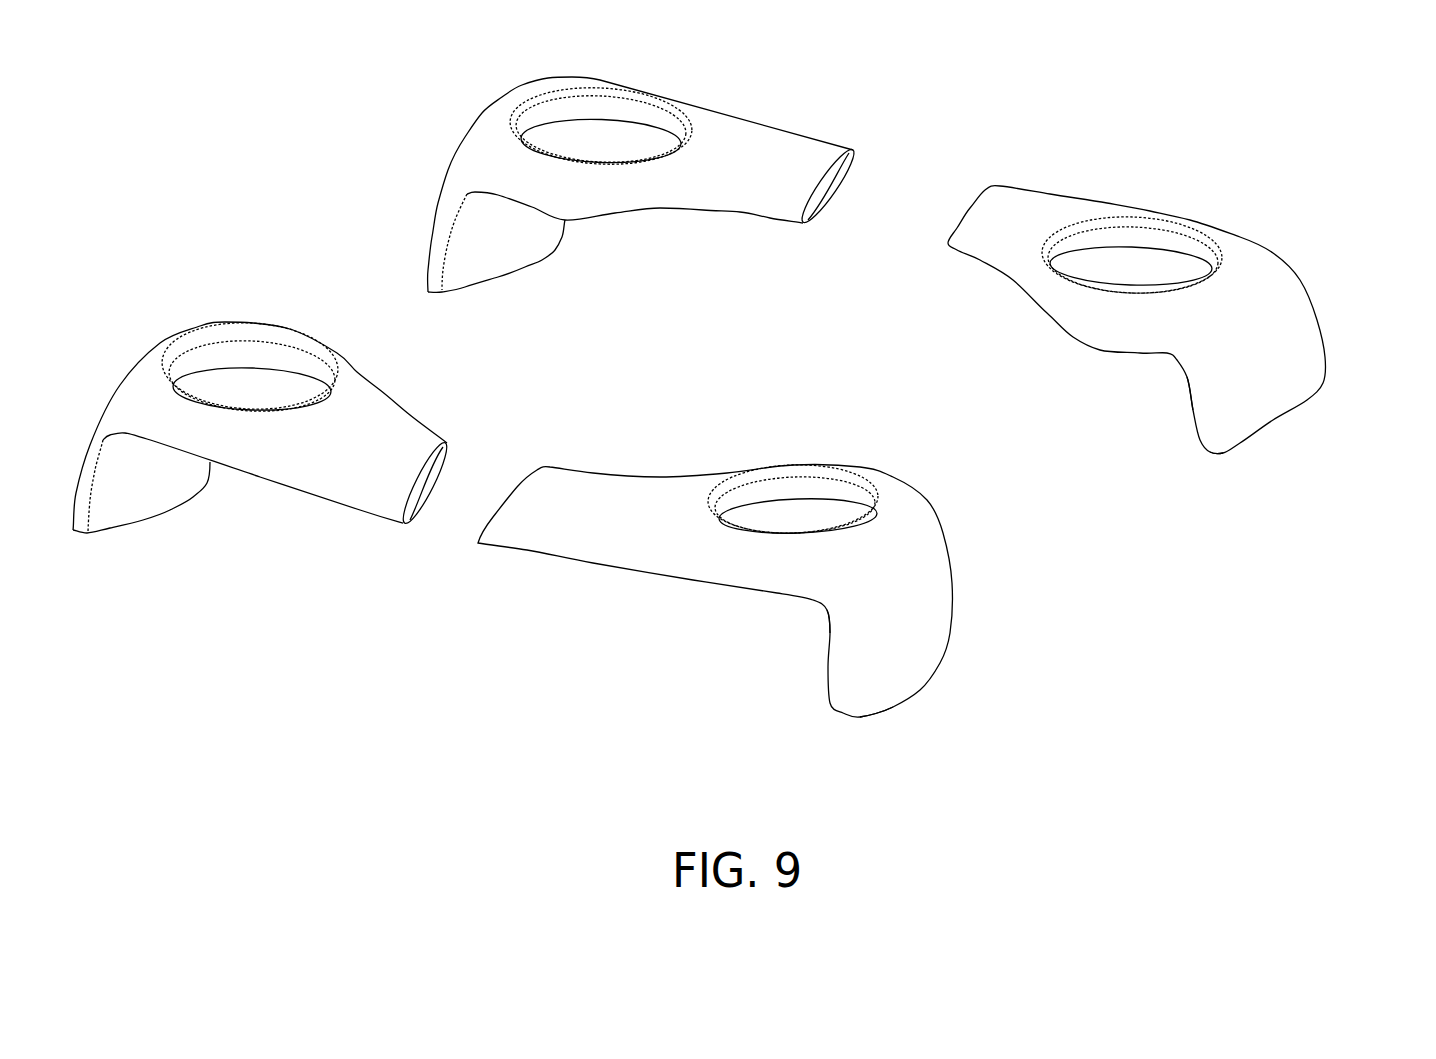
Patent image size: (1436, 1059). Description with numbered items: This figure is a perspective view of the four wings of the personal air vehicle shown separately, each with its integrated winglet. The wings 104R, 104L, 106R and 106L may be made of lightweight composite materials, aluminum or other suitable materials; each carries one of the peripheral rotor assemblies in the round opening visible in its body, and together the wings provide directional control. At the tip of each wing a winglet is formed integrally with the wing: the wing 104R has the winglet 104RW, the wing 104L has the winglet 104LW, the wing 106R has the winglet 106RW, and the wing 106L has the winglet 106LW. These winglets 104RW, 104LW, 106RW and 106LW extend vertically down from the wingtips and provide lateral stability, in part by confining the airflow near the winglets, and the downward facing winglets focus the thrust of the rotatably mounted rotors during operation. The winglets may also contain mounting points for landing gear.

The wing 104R is at (733, 163).
The integrated winglet 104RW is at (493, 260).
The wing 104L is at (1017, 222).
The integrated winglet 104LW is at (1250, 413).
The wing 106R is at (340, 467).
The integrated winglet 106RW is at (143, 502).
The wing 106L is at (632, 510).
The integrated winglet 106LW is at (892, 688).